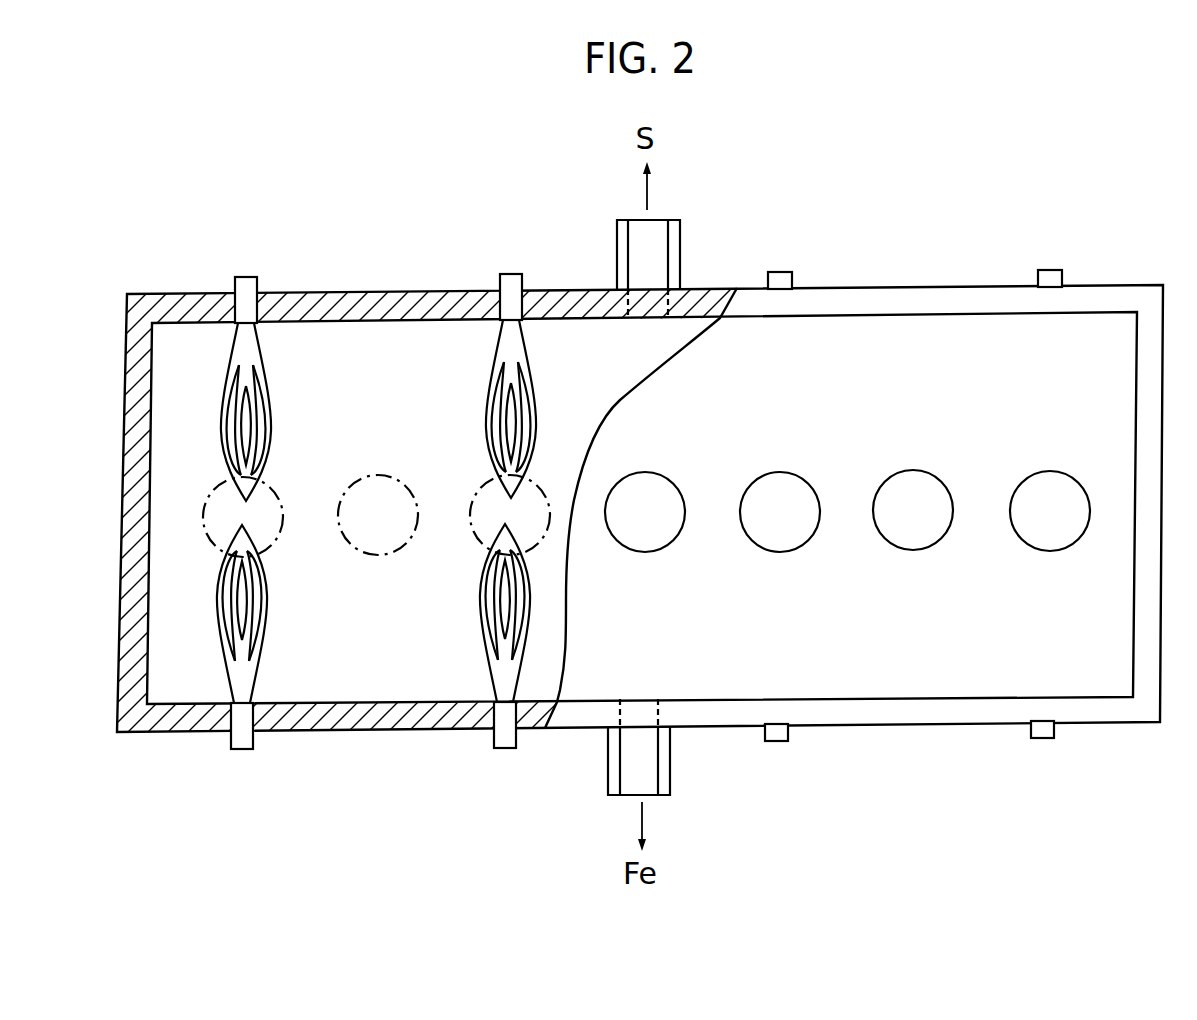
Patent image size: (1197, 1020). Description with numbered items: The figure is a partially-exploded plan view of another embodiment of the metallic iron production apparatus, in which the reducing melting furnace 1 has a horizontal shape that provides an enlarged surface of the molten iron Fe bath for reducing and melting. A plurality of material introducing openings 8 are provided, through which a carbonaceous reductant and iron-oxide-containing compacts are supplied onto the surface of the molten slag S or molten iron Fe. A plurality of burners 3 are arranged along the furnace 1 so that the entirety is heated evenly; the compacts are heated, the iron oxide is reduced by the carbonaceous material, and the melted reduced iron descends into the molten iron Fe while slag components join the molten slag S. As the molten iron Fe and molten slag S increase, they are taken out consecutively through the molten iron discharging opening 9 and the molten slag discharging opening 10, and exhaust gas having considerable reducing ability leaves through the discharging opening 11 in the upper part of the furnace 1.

The reducing melting furnace 1 is at (143, 311).
The burners 3 is at (246, 286).
The material introducing openings 8 is at (262, 548).
The molten iron discharging opening 9 is at (608, 770).
The molten slag discharging opening 10 is at (618, 243).
The discharging opening 11 is at (645, 472).